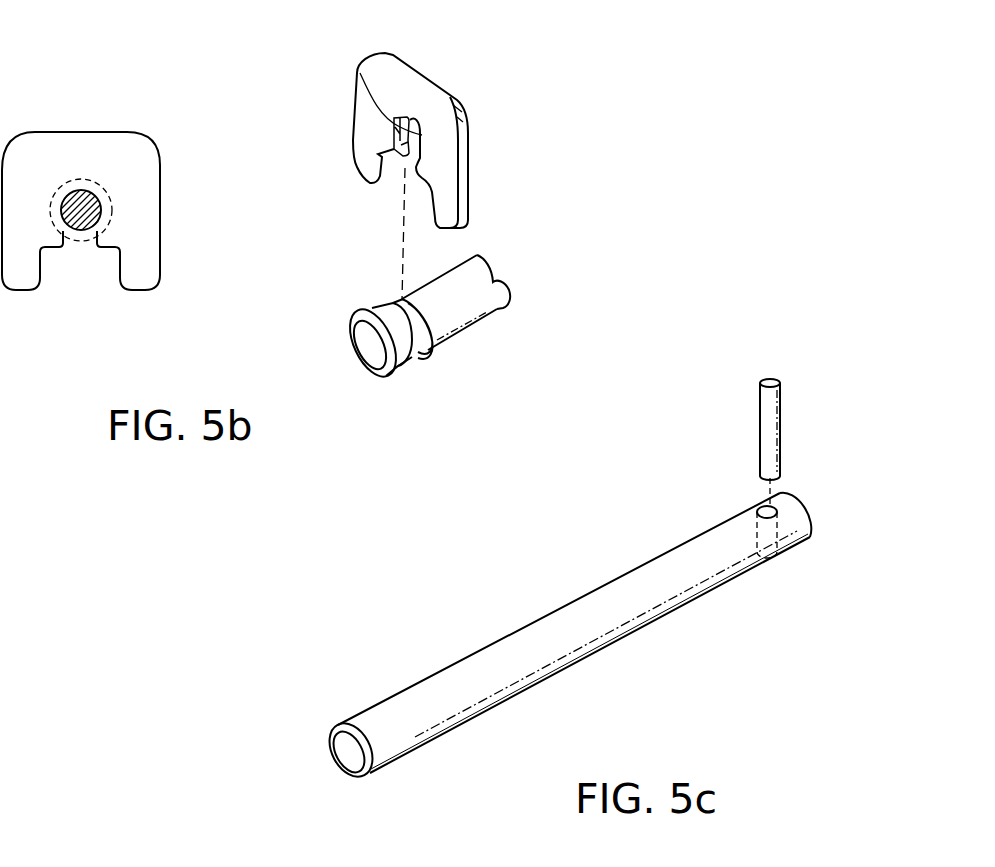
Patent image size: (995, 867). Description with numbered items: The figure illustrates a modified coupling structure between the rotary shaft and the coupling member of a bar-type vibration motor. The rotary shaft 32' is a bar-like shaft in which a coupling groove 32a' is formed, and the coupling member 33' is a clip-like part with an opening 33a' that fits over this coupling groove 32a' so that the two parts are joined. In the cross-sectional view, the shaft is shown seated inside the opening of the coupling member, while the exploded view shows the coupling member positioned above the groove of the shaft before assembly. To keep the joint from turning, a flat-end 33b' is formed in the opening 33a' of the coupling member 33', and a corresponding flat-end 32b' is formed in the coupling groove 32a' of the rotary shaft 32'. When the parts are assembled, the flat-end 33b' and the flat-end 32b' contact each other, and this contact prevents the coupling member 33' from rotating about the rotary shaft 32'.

The rotary shaft 32' is at (285, 229).
The coupling member 33' is at (284, 176).
The opening 33a' is at (349, 82).
The flat-end 33b' is at (332, 134).
The coupling groove 32a' is at (348, 312).
The flat-end 32b' is at (444, 357).